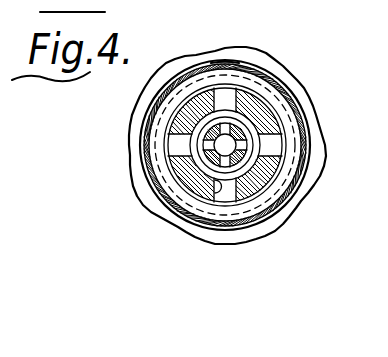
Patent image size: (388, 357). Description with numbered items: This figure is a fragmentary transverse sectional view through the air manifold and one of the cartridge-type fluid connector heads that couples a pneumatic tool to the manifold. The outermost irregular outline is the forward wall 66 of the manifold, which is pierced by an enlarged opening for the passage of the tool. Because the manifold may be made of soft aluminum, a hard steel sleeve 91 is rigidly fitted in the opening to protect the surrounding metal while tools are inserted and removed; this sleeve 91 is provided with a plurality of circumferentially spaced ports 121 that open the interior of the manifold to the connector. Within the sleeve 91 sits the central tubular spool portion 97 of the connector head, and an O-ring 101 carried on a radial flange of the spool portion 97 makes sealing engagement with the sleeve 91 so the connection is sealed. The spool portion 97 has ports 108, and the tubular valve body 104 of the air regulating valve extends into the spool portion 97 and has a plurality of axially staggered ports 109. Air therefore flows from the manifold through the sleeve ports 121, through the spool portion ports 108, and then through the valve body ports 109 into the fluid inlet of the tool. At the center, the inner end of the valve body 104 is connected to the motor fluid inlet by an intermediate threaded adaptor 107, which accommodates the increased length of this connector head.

The forward wall 66 is at (309, 111).
The central tubular spool portion 97 is at (268, 100).
The sleeve 91 is at (240, 70).
The O-ring 101 is at (292, 191).
The port 121 is at (232, 62).
The threaded adaptor 107 is at (243, 162).
The tubular valve body 104 is at (208, 127).
The ports 109 is at (207, 148).
The ports 108 is at (216, 184).